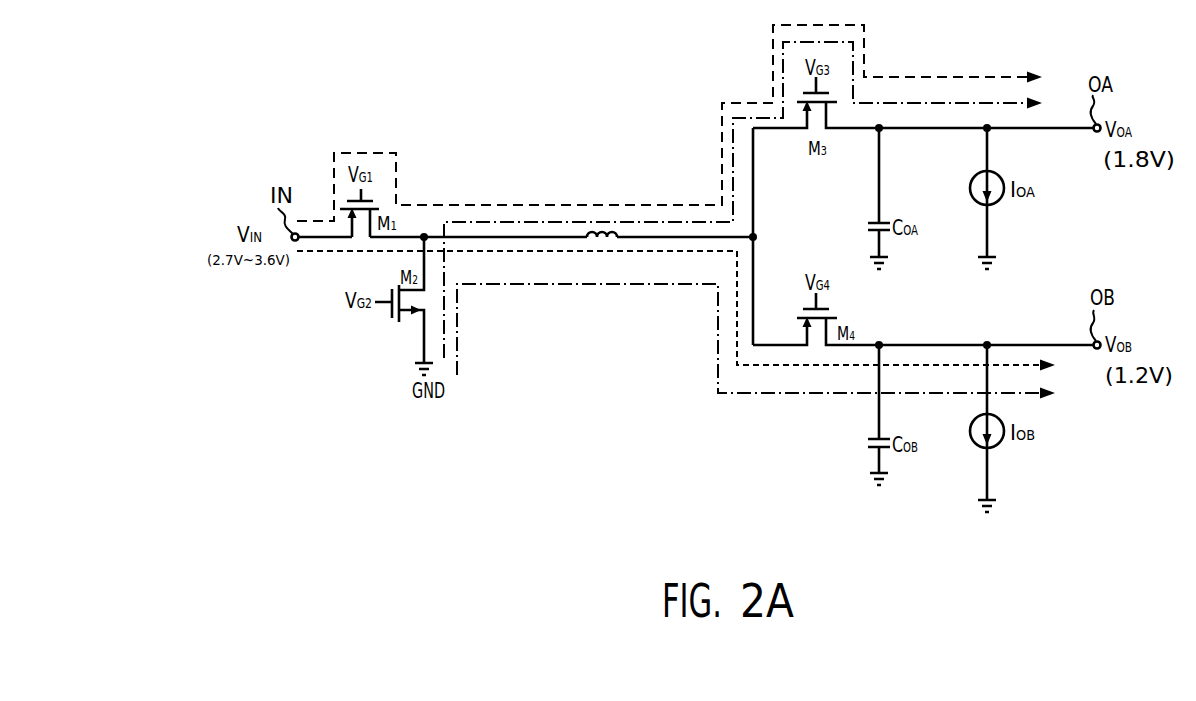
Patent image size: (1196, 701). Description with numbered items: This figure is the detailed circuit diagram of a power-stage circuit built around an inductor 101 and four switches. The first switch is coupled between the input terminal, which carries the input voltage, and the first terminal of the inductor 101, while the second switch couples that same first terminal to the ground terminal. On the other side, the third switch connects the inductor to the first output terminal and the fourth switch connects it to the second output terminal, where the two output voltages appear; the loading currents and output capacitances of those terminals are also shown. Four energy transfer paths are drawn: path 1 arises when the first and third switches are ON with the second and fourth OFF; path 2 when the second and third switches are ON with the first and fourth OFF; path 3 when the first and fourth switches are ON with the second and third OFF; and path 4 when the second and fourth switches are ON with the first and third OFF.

The inductor 101 is at (615, 230).
The energy transfer path 1 is at (689, 123).
The energy transfer path 2 is at (763, 200).
The energy transfer path 3 is at (696, 317).
The energy transfer path 4 is at (776, 347).